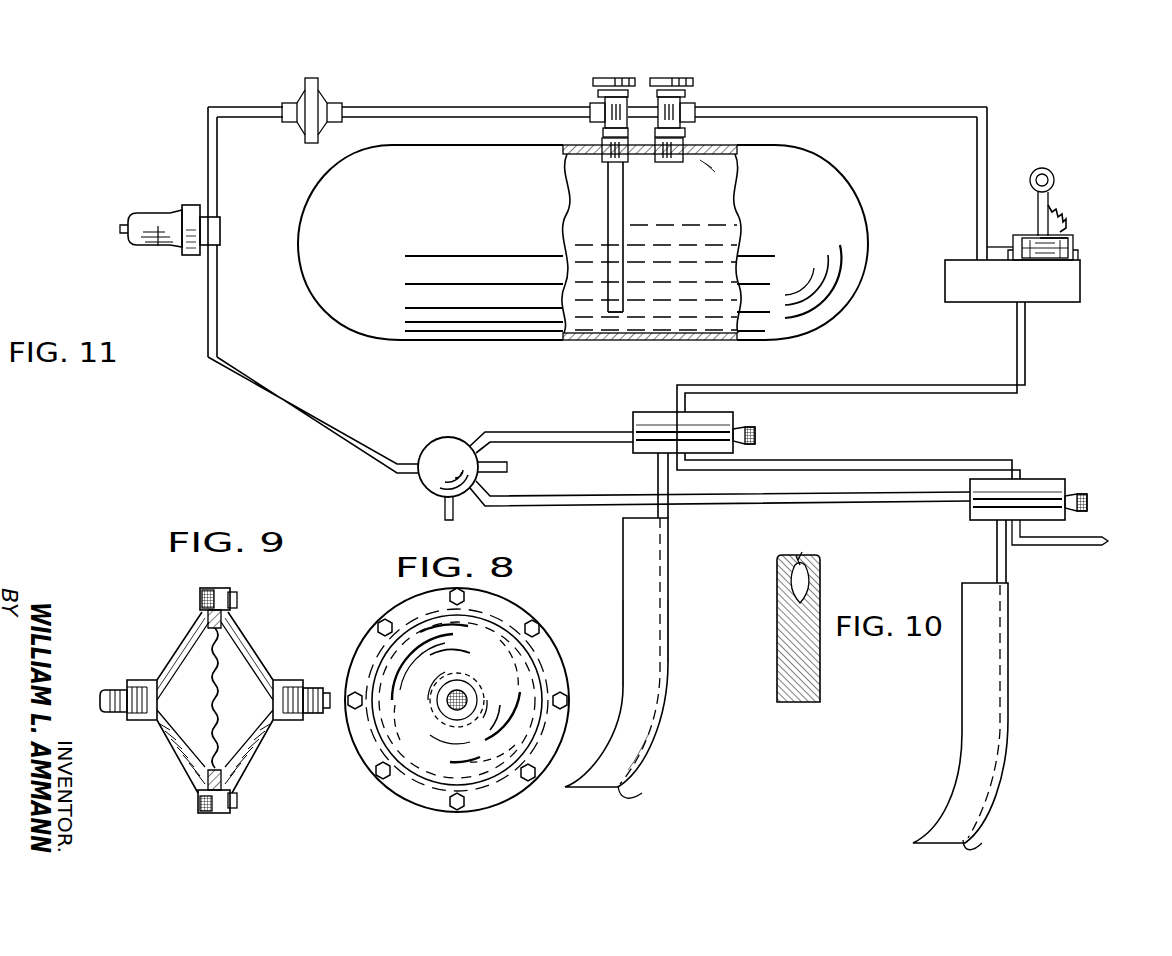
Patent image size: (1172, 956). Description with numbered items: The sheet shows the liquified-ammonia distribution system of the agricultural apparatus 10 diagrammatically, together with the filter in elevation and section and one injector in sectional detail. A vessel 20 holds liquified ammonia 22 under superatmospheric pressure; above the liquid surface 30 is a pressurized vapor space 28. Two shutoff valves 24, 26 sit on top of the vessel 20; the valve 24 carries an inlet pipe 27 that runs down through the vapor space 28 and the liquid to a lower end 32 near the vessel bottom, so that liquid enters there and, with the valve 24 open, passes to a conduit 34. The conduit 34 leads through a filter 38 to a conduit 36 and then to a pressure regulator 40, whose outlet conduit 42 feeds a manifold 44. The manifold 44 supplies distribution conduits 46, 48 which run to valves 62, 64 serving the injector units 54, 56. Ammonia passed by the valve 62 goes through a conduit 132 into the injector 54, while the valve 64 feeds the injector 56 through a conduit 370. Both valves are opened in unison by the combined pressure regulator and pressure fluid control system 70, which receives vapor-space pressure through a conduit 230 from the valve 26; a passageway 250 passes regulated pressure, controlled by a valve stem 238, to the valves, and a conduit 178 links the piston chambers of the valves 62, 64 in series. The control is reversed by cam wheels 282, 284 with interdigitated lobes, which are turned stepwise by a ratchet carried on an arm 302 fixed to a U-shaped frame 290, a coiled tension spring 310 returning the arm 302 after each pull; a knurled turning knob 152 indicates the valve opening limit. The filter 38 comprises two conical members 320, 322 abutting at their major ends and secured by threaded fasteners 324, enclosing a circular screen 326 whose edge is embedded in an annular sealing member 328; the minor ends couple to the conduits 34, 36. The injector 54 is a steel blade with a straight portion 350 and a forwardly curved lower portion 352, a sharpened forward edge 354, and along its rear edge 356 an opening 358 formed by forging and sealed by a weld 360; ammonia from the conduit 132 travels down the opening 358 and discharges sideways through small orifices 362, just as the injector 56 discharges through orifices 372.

In FIG. 11, the agricultural apparatus 10 is at (690, 590).
In FIG. 11, the vessel 20 is at (832, 188).
In FIG. 11, the liquified ammonia 22 is at (672, 300).
In FIG. 11, the shutoff valve 24 is at (600, 108).
In FIG. 11, the shutoff valve 26 is at (690, 105).
In FIG. 11, the inlet pipe 27 is at (618, 203).
In FIG. 11, the vapor space 28 is at (712, 170).
In FIG. 11, the surface 30 is at (566, 186).
In FIG. 11, the lower end 32 is at (606, 318).
In FIG. 11, the conduit 34 is at (493, 105).
In FIG. 9, the conduit 34 is at (313, 688).
In FIG. 8, the conduit 34 is at (447, 700).
In FIG. 11, the conduit 36 is at (236, 107).
In FIG. 9, the conduit 36 is at (120, 696).
In FIG. 11, the filter 38 is at (328, 102).
In FIG. 9, the filter 38 is at (246, 652).
In FIG. 8, the filter 38 is at (392, 609).
In FIG. 11, the pressure regulator 40 is at (152, 252).
In FIG. 11, the conduit 42 is at (272, 393).
In FIG. 11, the manifold 44 is at (456, 445).
In FIG. 11, the conduit 46 is at (578, 442).
In FIG. 11, the conduit 48 is at (876, 505).
In FIG. 11, the injector unit 54 is at (622, 548).
In FIG. 10, the injector unit 54 is at (820, 680).
In FIG. 11, the injector unit 56 is at (962, 670).
In FIG. 11, the valve 62 is at (653, 425).
In FIG. 11, the valve 64 is at (1040, 488).
In FIG. 11, the combined pressure regulator and pressure fluid control system 70 is at (935, 310).
In FIG. 11, the conduit 132 is at (656, 478).
In FIG. 11, the knurled turning knob 152 is at (757, 440).
In FIG. 11, the conduit 178 is at (824, 468).
In FIG. 11, the conduit 230 is at (853, 107).
In FIG. 11, the valve stem 238 is at (1055, 265).
In FIG. 11, the passageway 250 is at (1028, 264).
In FIG. 11, the cam wheel 282 is at (1075, 248).
In FIG. 11, the cam wheel 284 is at (977, 247).
In FIG. 11, the U-shaped frame 290 is at (1066, 240).
In FIG. 11, the arm 302 is at (1037, 208).
In FIG. 11, the coiled tension spring 310 is at (1060, 218).
In FIG. 9, the conical member 320 is at (258, 730).
In FIG. 8, the conical member 320 is at (428, 710).
In FIG. 9, the conical member 322 is at (178, 750).
In FIG. 9, the threaded fasteners 324 is at (233, 600).
In FIG. 8, the threaded fasteners 324 is at (456, 800).
In FIG. 9, the circular screen 326 is at (220, 682).
In FIG. 9, the annular sealing member 328 is at (206, 622).
In FIG. 11, the straight portion 350 is at (648, 572).
In FIG. 11, the curved lower portion 352 is at (640, 728).
In FIG. 11, the forward edge 354 is at (622, 578).
In FIG. 11, the rear edge 356 is at (670, 690).
In FIG. 10, the opening 358 is at (806, 594).
In FIG. 10, the weld 360 is at (798, 560).
In FIG. 11, the orifices 362 is at (632, 795).
In FIG. 11, the conduit 370 is at (1006, 560).
In FIG. 11, the orifices 372 is at (980, 836).